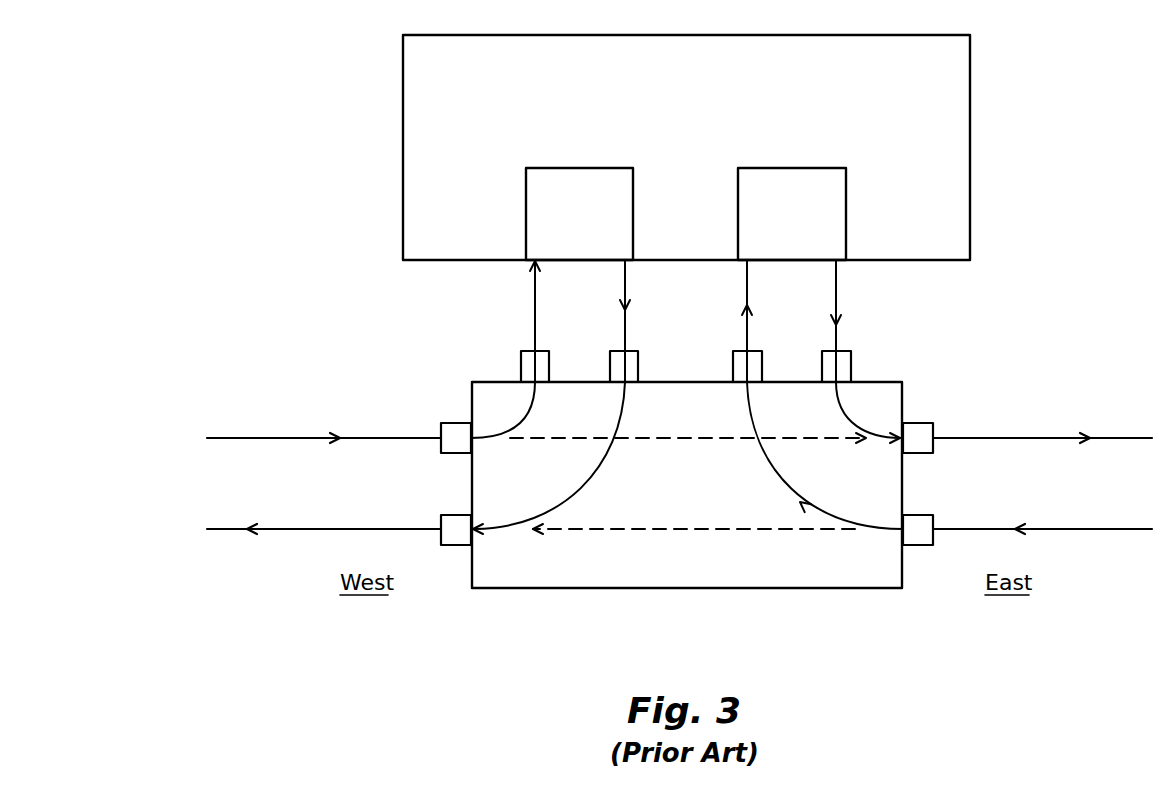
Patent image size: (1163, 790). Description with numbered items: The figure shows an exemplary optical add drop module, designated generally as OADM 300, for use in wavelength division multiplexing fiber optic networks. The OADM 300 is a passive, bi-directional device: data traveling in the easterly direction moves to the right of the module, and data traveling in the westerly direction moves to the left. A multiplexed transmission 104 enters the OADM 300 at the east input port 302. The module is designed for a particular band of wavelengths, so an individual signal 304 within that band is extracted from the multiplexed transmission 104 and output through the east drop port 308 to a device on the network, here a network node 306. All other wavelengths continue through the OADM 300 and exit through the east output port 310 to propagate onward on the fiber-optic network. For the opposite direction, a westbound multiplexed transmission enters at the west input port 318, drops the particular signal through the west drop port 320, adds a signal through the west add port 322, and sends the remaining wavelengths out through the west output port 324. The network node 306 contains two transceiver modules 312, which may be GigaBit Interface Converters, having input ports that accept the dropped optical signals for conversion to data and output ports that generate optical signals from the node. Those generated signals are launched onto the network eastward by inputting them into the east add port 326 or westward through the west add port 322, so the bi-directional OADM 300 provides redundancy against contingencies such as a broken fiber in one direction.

The multiplexed transmission 104 is at (226, 437).
The OADM 300 is at (480, 627).
The east input port 302 is at (456, 423).
The individual signal 304 is at (535, 291).
The network node 306 is at (962, 81).
The east drop port 308 is at (522, 360).
The east output port 310 is at (910, 423).
The transceiver modules 312 is at (792, 168).
The west input port 318 is at (910, 515).
The west drop port 320 is at (757, 358).
The west add port 322 is at (617, 360).
The west output port 324 is at (456, 515).
The east add port 326 is at (848, 362).